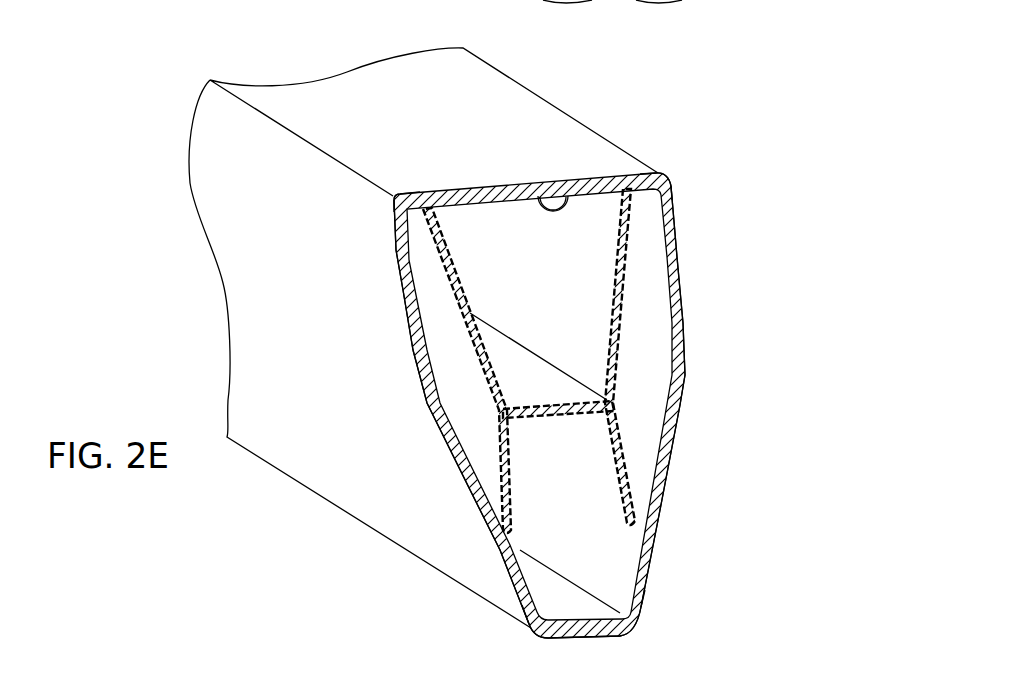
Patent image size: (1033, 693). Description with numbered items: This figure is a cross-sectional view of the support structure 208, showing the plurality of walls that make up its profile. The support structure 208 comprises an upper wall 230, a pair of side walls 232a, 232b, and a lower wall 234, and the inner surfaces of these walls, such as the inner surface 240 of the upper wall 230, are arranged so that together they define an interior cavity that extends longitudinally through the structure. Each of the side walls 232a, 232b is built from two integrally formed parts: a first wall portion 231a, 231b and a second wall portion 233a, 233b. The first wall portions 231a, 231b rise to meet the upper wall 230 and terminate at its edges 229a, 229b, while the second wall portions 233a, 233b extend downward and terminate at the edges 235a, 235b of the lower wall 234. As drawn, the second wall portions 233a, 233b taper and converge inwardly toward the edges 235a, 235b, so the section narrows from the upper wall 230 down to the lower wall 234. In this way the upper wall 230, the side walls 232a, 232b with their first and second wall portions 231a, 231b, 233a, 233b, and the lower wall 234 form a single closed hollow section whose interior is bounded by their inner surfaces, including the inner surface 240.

The support structure 208 is at (592, 57).
The upper wall 230 is at (380, 103).
The inner surface 240 is at (570, 205).
The edge 229a is at (394, 199).
The edge 229b is at (667, 178).
The first wall portion 231a is at (242, 184).
The first wall portion 231b is at (678, 232).
The side wall 232a is at (275, 273).
The side wall 232b is at (677, 458).
The second wall portion 233a is at (413, 490).
The second wall portion 233b is at (656, 548).
The edge 235a is at (538, 637).
The edge 235b is at (636, 622).
The lower wall 234 is at (585, 641).